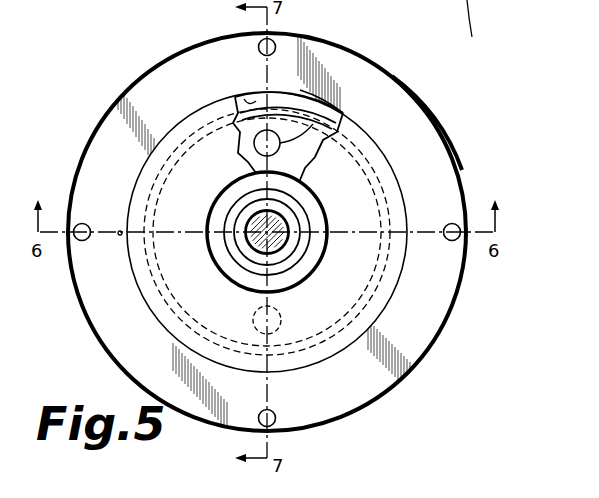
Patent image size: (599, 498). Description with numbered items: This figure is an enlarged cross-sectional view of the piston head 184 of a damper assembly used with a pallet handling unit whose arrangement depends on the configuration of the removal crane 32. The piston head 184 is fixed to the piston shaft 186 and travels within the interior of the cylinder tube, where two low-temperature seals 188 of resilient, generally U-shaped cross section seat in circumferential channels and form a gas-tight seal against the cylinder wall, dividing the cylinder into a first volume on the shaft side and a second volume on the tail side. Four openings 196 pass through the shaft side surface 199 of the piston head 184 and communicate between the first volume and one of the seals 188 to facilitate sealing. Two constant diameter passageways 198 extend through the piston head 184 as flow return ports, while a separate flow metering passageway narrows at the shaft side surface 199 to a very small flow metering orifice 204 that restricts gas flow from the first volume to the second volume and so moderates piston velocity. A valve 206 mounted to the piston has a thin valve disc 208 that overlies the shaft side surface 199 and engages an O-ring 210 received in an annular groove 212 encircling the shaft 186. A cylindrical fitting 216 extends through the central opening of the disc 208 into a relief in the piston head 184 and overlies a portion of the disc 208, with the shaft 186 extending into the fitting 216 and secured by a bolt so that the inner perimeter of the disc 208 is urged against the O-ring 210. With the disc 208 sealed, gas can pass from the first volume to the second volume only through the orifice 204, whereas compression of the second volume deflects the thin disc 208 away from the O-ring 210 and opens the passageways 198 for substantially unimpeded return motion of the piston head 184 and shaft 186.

The removal crane 32 is at (471, 29).
The piston head 184 is at (420, 365).
The piston shaft 186 is at (277, 245).
The low-temperature seals 188 is at (457, 144).
The openings 196 is at (452, 241).
The constant diameter passageways 198 is at (320, 118).
The shaft side surface 199 is at (182, 97).
The flow metering orifice 204 is at (119, 234).
The valve 206 is at (148, 324).
The valve disc 208 is at (372, 137).
The O-ring 210 is at (292, 106).
The annular groove 212 is at (240, 97).
The cylindrical fitting 216 is at (323, 200).